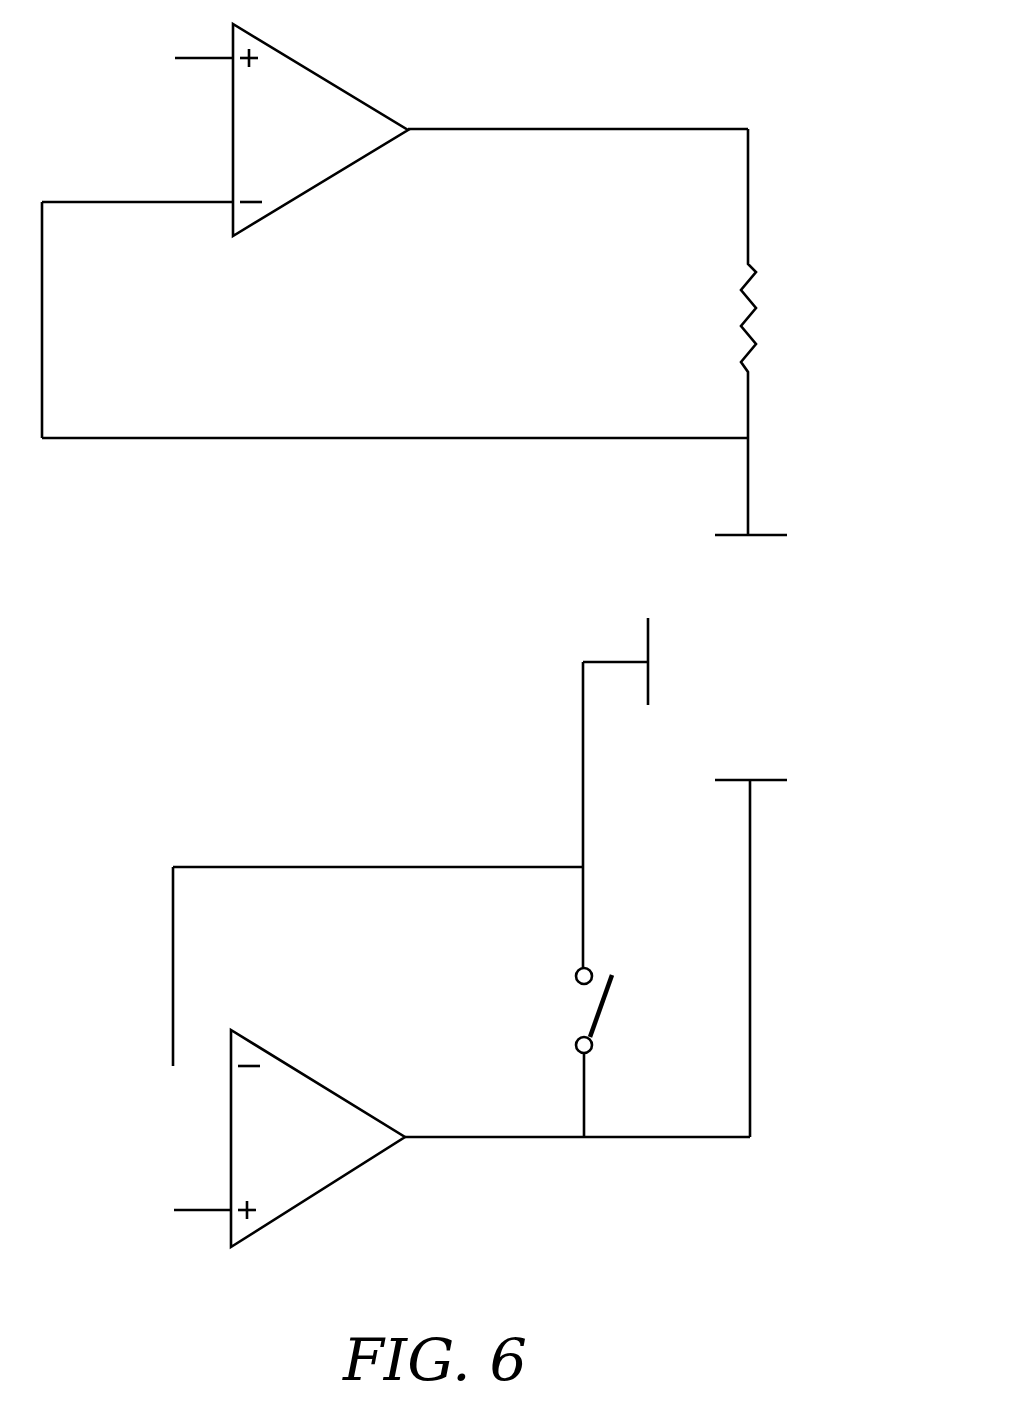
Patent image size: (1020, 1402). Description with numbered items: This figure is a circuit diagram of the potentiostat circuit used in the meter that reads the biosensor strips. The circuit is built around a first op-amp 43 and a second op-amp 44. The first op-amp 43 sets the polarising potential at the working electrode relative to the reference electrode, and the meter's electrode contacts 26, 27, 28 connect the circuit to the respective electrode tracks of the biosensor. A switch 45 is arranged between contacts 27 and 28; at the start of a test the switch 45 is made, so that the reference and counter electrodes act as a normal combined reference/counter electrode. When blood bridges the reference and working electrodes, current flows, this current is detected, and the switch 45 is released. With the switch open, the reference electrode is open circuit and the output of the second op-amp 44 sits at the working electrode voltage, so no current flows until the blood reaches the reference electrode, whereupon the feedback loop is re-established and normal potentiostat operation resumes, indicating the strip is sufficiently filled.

The electrode contact 26 is at (737, 478).
The electrode contact 27 is at (762, 895).
The electrode contact 28 is at (572, 717).
The first op-amp 43 is at (308, 171).
The second op-amp 44 is at (323, 1112).
The switch 45 is at (608, 1012).